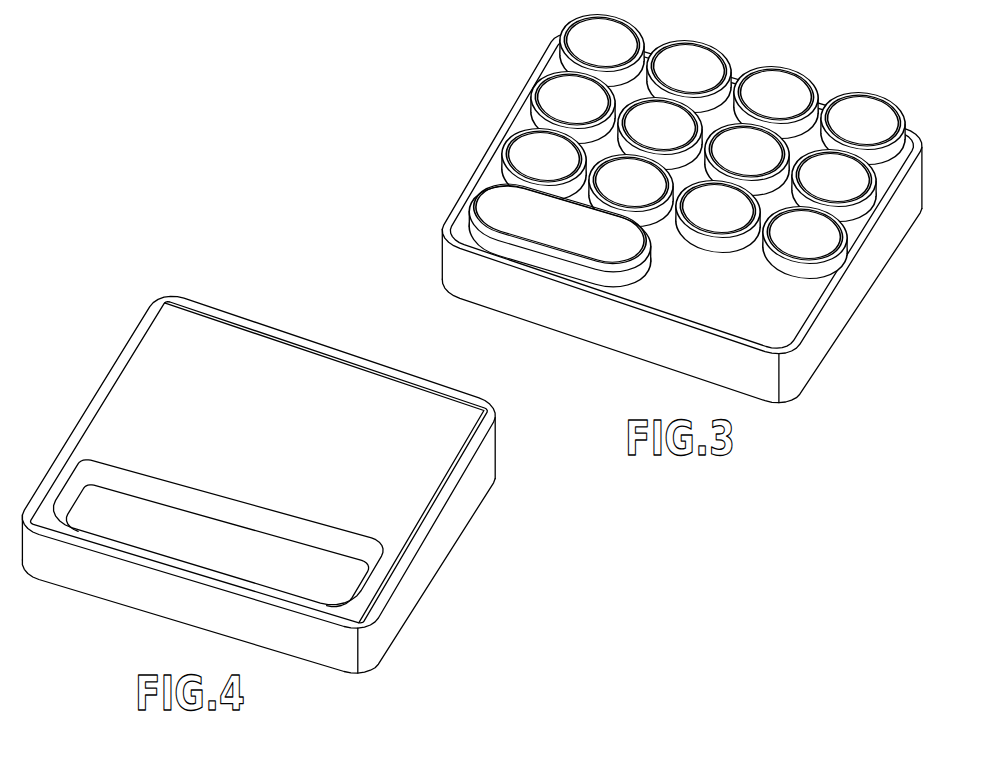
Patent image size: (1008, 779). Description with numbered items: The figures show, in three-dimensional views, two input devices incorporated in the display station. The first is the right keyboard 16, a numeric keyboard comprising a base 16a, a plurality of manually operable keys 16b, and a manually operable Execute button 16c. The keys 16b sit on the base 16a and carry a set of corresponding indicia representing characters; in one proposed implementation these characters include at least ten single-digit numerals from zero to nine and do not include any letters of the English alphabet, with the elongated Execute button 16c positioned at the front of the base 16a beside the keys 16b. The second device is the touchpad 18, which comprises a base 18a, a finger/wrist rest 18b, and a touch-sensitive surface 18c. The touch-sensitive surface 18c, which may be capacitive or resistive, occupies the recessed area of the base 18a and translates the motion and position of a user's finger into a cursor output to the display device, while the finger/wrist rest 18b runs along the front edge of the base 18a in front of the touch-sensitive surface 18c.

In FIG. 3, the right keyboard 16 is at (658, 203).
In FIG. 3, the base 16a is at (607, 343).
In FIG. 3, the manually operable keys 16b is at (822, 235).
In FIG. 3, the Execute button 16c is at (492, 203).
In FIG. 4, the touchpad 18 is at (285, 481).
In FIG. 4, the base 18a is at (90, 588).
In FIG. 4, the finger/wrist rest 18b is at (370, 567).
In FIG. 4, the touch-sensitive surface 18c is at (410, 487).